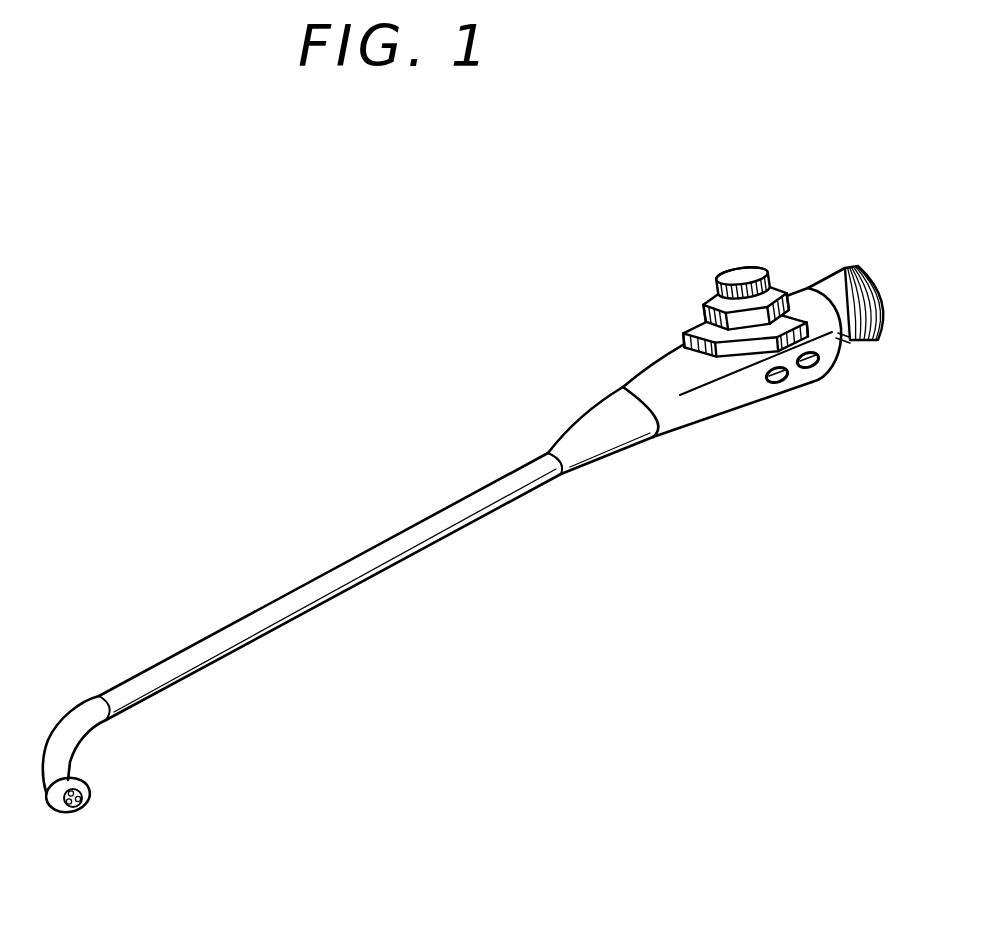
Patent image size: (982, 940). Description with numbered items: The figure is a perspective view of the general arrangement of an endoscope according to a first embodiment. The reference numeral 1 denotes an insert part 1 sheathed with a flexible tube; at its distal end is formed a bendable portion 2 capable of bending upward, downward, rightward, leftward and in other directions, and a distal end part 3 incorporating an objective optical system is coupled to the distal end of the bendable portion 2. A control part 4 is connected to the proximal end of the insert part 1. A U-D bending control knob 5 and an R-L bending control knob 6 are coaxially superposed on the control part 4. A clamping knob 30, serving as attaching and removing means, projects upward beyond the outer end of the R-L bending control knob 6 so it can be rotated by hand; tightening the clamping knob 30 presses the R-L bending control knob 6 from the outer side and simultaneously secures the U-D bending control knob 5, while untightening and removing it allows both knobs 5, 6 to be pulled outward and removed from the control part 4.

The insert part 1 is at (372, 545).
The bendable portion 2 is at (72, 706).
The distal end part 3 is at (77, 779).
The control part 4 is at (717, 408).
The U-D bending control knob 5 is at (700, 322).
The R-L bending control knob 6 is at (713, 298).
The clamping knob 30 is at (738, 270).